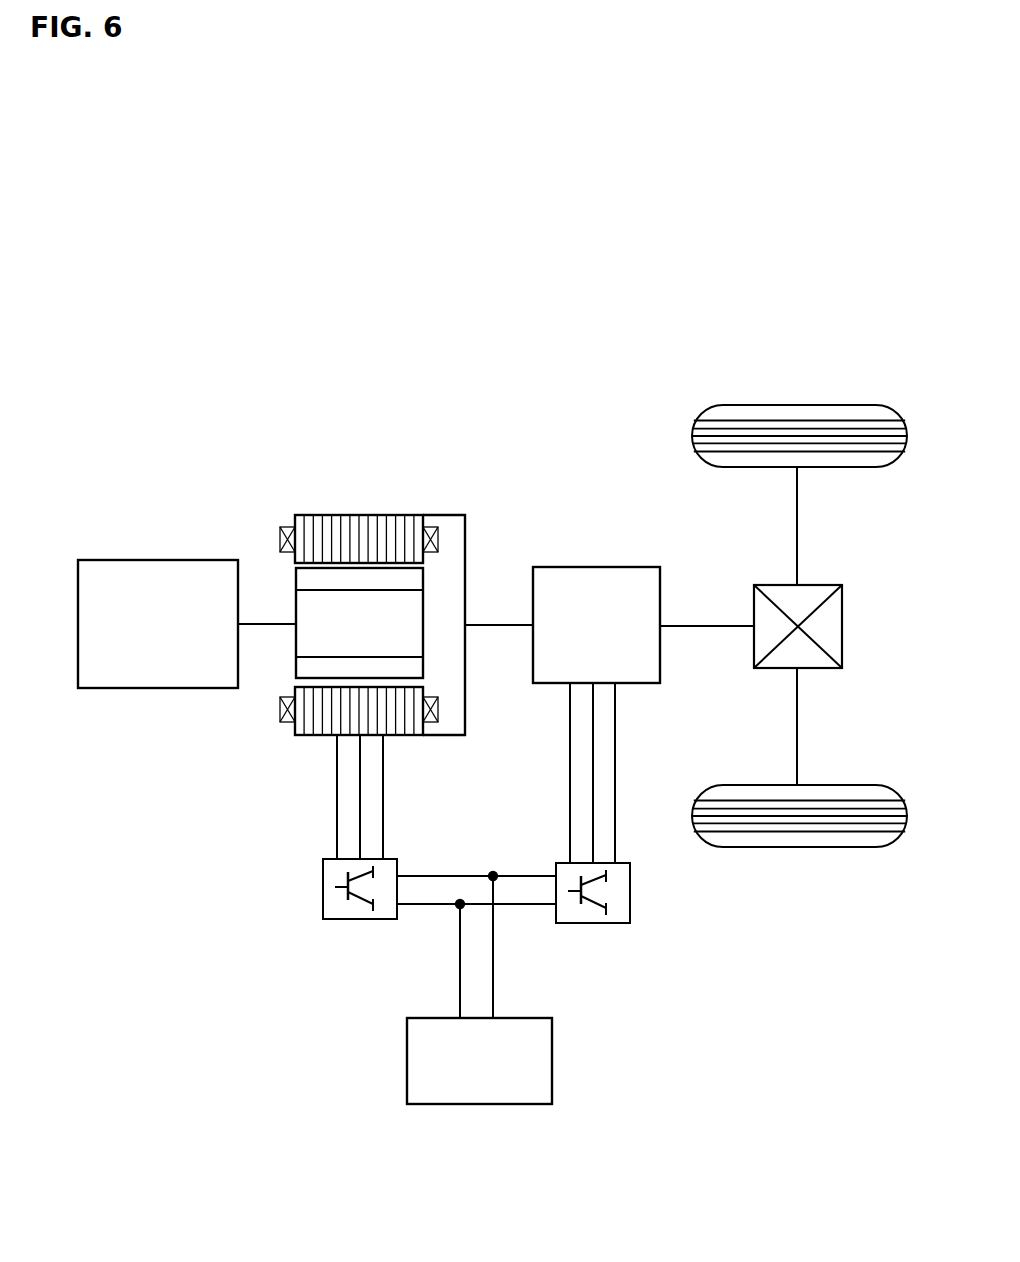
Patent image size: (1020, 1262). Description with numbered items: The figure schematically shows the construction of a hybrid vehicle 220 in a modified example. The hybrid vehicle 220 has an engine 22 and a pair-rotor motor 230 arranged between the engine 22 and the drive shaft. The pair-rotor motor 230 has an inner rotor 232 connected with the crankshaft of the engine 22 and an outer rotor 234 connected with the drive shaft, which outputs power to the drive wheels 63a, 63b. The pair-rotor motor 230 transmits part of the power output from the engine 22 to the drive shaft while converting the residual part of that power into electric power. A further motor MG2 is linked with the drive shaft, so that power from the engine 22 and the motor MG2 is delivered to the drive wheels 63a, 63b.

The hybrid vehicle 220 is at (468, 258).
The engine 22 is at (157, 688).
The pair-rotor motor 230 is at (373, 342).
The inner rotor 232 is at (296, 600).
The outer rotor 234 is at (412, 515).
The motor MG2 is at (596, 567).
The drive wheel 63a is at (797, 405).
The drive wheel 63b is at (797, 848).